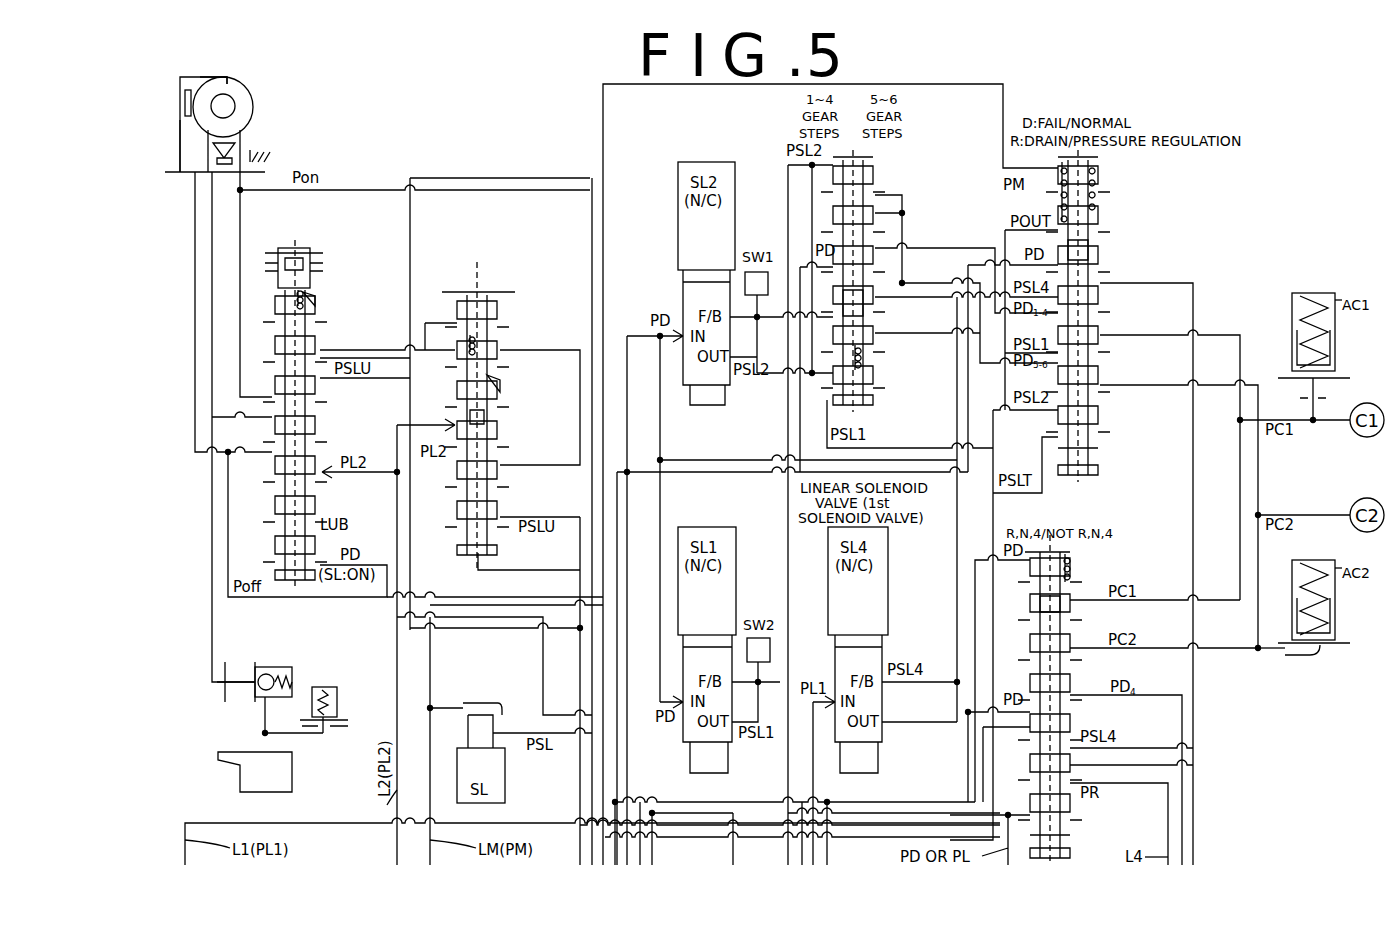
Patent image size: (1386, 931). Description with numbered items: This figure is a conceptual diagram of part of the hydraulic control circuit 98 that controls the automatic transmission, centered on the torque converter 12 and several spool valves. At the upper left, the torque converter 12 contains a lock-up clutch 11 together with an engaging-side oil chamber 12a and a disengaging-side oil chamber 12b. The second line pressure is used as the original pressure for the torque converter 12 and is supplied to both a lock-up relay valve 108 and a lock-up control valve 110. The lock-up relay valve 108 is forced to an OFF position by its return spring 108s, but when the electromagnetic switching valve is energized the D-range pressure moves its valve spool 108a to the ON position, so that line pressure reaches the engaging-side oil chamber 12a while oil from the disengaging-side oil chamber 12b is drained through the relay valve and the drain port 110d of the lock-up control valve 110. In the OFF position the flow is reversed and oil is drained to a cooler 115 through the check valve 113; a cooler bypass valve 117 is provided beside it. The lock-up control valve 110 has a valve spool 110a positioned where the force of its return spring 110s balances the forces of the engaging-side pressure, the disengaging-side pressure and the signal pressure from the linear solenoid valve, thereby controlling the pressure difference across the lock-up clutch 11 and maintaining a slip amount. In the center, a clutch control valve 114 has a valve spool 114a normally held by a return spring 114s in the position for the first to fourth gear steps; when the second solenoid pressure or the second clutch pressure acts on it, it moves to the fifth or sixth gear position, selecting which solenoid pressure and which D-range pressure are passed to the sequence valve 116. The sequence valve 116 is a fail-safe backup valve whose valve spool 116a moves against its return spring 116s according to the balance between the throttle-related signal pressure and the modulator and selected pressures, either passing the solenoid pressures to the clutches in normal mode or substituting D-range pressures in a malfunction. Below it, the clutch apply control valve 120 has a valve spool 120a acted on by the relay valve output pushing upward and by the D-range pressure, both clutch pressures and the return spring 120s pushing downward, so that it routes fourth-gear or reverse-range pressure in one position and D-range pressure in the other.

The torque converter 12 is at (282, 94).
The engaging-side oil chamber 12a is at (205, 80).
The lock-up clutch 11 is at (185, 103).
The disengaging-side oil chamber 12b is at (183, 145).
The lock-up relay valve 108 is at (330, 220).
The return spring 108s is at (306, 288).
The valve spool 108a is at (318, 303).
The lock-up control valve 110 is at (488, 246).
The return spring 110s is at (480, 368).
The valve spool 110a is at (492, 398).
The drain port 110d is at (492, 420).
The check valve 113 is at (282, 650).
The cooler bypass valve 117 is at (356, 668).
The cooler 115 is at (292, 774).
The clutch control valve 114 is at (910, 166).
The valve spool 114a is at (862, 300).
The return spring 114s is at (864, 366).
The sequence valve 116 is at (1205, 187).
The return spring 116s is at (1133, 176).
The valve spool 116a is at (1098, 253).
The hydraulic control circuit 98 is at (1320, 140).
The clutch apply control valve 120 is at (1162, 537).
The valve spool 120a is at (1040, 591).
The return spring 120s is at (1066, 563).